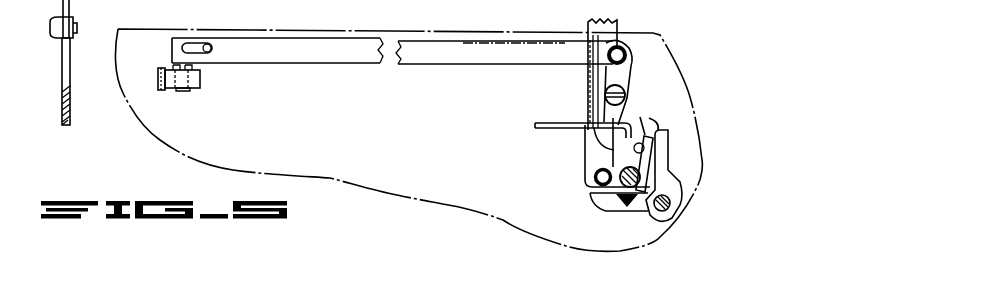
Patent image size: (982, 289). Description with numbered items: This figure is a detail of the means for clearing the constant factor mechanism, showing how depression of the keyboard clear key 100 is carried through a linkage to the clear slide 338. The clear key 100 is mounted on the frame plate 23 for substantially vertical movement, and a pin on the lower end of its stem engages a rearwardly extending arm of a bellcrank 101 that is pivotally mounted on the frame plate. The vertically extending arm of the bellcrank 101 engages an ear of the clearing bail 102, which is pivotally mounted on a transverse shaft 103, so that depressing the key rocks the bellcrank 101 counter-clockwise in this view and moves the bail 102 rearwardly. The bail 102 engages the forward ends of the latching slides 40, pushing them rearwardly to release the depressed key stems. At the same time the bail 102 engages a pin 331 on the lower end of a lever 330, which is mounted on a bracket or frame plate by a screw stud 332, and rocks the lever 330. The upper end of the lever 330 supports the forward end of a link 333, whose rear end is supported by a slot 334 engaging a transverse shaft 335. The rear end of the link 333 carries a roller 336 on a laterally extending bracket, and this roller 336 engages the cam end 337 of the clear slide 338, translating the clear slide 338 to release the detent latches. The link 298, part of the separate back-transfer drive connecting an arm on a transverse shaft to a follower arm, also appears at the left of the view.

The frame plate 23 is at (697, 125).
The latching slide 40 is at (537, 127).
The keyboard clear key 100 is at (596, 140).
The bellcrank 101 is at (667, 172).
The clearing bail 102 is at (648, 132).
The transverse shaft 103 is at (632, 196).
The link 298 is at (62, 67).
The lever 330 is at (610, 113).
The pin 331 is at (638, 150).
The screw stud 332 is at (625, 90).
The link 333 is at (448, 60).
The slot 334 is at (198, 43).
The transverse shaft 335 is at (208, 45).
The roller 336 is at (182, 90).
The cam end 337 is at (202, 80).
The clear slide 338 is at (160, 69).